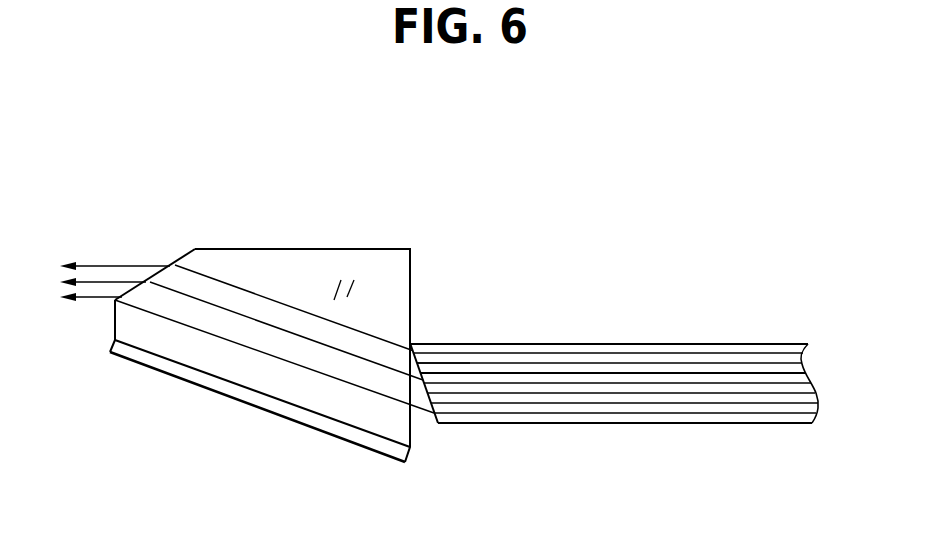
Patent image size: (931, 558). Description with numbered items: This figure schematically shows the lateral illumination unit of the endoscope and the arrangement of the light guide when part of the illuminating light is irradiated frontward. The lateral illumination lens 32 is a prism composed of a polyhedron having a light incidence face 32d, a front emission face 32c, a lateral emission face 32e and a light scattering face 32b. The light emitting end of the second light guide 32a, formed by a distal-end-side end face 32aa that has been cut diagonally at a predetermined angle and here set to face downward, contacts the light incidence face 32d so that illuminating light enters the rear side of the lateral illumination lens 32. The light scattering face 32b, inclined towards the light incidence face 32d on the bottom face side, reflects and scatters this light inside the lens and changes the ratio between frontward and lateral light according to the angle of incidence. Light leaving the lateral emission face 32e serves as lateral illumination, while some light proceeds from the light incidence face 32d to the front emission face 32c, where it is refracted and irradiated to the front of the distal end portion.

The lateral illumination lens 32 is at (366, 248).
The second light guide 32a is at (679, 350).
The distal-end-side end face 32aa is at (427, 426).
The light scattering face 32b is at (273, 390).
The front emission face 32c is at (182, 251).
The light incidence face 32d is at (428, 369).
The lateral emission face 32e is at (282, 240).